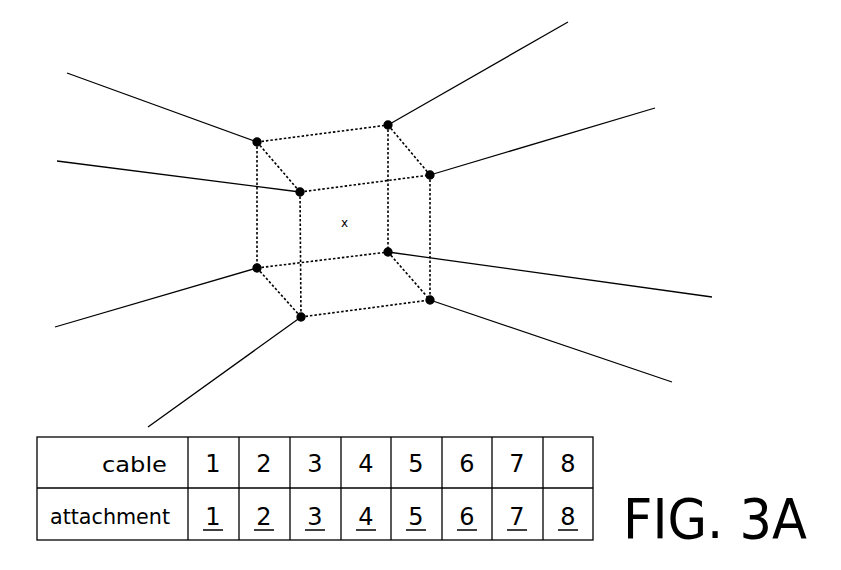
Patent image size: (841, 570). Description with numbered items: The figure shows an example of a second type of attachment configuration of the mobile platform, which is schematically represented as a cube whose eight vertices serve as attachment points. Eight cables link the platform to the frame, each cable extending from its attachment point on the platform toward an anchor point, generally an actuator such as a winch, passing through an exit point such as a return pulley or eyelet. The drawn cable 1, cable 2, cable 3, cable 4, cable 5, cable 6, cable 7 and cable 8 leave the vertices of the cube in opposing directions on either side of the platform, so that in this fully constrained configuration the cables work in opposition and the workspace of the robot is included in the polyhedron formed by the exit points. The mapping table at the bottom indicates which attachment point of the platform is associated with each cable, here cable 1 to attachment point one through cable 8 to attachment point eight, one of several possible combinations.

The cable 1 is at (383, 156).
The cable 2 is at (413, 246).
The cable 3 is at (458, 201).
The cable 4 is at (445, 329).
The cable 5 is at (325, 222).
The cable 6 is at (318, 346).
The cable 7 is at (267, 132).
The cable 8 is at (260, 299).